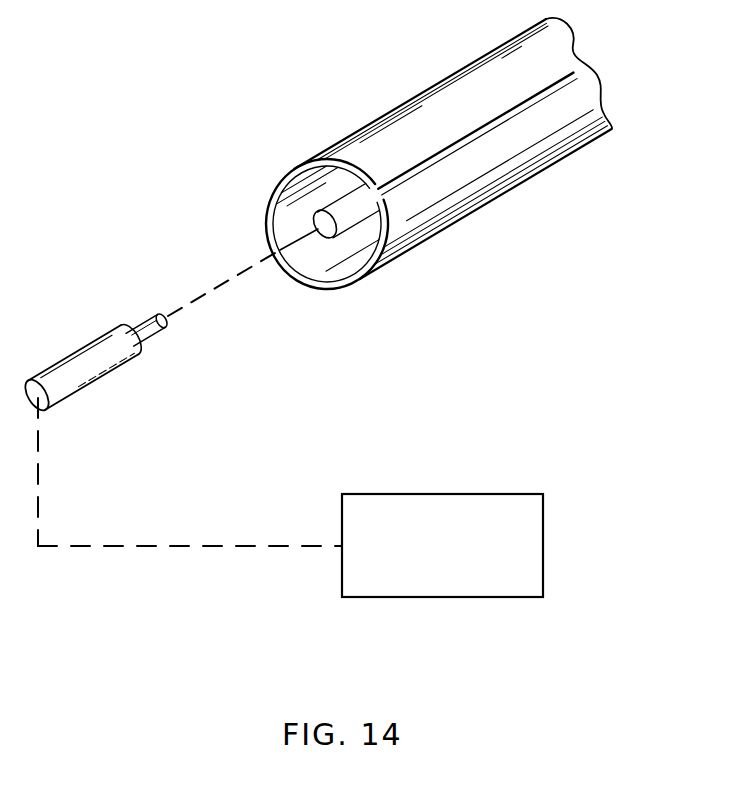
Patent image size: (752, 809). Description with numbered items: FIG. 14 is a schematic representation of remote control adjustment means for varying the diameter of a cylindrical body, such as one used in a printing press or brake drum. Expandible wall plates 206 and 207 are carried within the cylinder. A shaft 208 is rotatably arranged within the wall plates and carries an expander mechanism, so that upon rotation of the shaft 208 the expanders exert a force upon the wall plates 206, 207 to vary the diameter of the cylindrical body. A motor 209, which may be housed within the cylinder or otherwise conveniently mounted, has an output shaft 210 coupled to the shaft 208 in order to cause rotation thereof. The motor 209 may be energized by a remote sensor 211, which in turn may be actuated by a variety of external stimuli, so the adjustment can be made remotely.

The expandible wall plate 206 is at (427, 107).
The expandible wall plate 207 is at (531, 170).
The shaft 208 is at (330, 233).
The motor 209 is at (100, 383).
The output shaft 210 is at (157, 340).
The remote sensor 211 is at (543, 532).